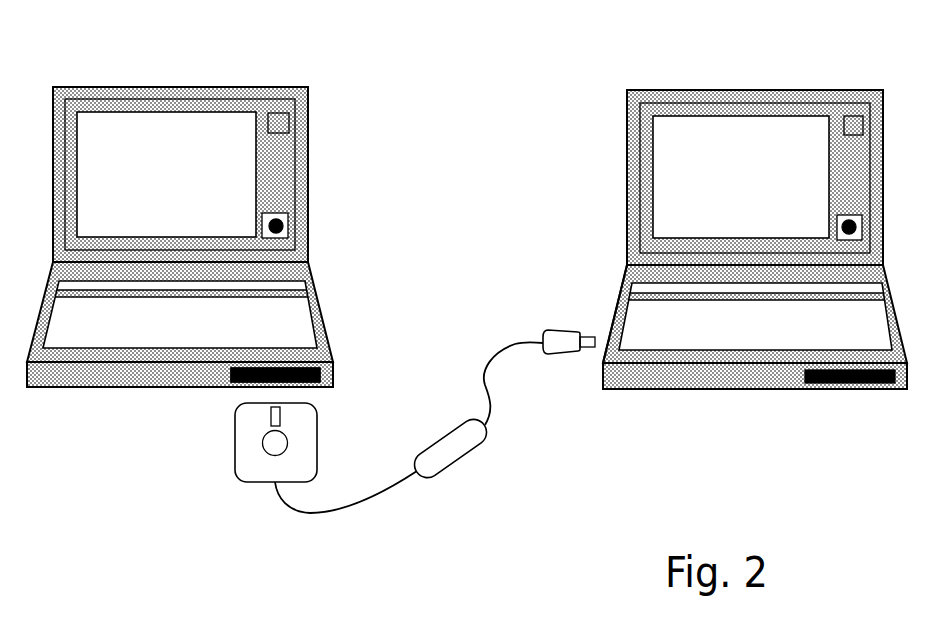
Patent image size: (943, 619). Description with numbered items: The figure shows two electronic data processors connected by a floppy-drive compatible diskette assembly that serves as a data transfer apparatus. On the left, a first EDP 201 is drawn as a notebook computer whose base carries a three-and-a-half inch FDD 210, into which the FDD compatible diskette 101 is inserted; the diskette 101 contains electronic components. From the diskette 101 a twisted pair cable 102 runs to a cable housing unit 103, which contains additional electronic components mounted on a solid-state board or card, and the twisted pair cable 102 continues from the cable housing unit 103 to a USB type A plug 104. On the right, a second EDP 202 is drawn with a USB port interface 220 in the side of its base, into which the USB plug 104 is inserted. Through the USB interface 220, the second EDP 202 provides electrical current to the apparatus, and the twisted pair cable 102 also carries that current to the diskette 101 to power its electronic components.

The first EDP 201 is at (179, 87).
The second EDP 202 is at (755, 89).
The 3.5" FDD 210 is at (325, 373).
The USB port interface 220 is at (609, 332).
The FDD compatible diskette 101 is at (235, 442).
The twisted pair cable 102 is at (364, 502).
The cable housing unit 103 is at (460, 462).
The USB type A plug 104 is at (563, 328).